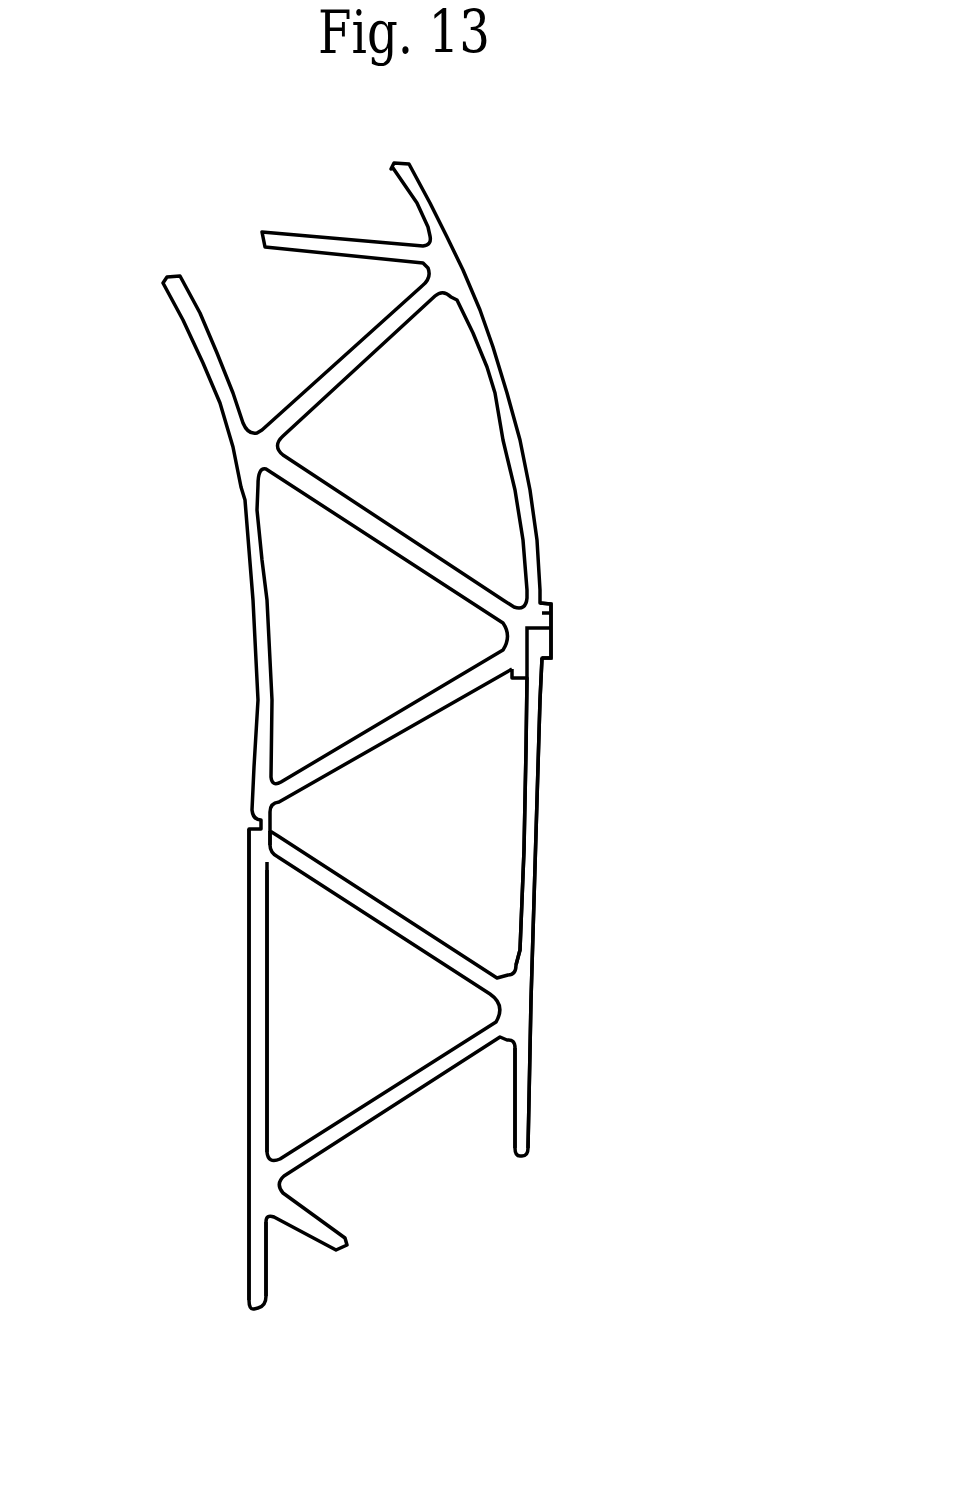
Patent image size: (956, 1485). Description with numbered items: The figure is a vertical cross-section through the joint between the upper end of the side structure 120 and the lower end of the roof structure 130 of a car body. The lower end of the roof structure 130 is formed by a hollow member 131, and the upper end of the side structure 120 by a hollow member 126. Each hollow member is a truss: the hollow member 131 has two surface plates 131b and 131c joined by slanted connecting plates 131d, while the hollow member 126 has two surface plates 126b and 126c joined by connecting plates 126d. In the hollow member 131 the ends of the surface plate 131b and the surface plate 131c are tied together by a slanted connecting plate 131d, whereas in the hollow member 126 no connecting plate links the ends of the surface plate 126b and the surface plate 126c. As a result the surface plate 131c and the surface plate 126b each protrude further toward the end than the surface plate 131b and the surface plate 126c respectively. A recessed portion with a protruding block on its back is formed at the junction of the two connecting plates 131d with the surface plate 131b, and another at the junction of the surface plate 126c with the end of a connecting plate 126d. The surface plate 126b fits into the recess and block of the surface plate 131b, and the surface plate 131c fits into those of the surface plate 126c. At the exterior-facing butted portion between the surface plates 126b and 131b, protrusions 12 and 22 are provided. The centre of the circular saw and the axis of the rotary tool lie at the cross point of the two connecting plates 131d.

The roof structure 130 is at (586, 358).
The hollow member 131 is at (509, 311).
The surface plate 131b is at (522, 450).
The surface plate 131c is at (110, 582).
The connecting plate 131d is at (313, 583).
The protrusion 22 is at (548, 612).
The protrusion 12 is at (548, 647).
The side structure 120 is at (640, 993).
The hollow member 126 is at (566, 1042).
The surface plate 126b is at (533, 892).
The surface plate 126c is at (120, 999).
The connecting plate 126d is at (306, 998).